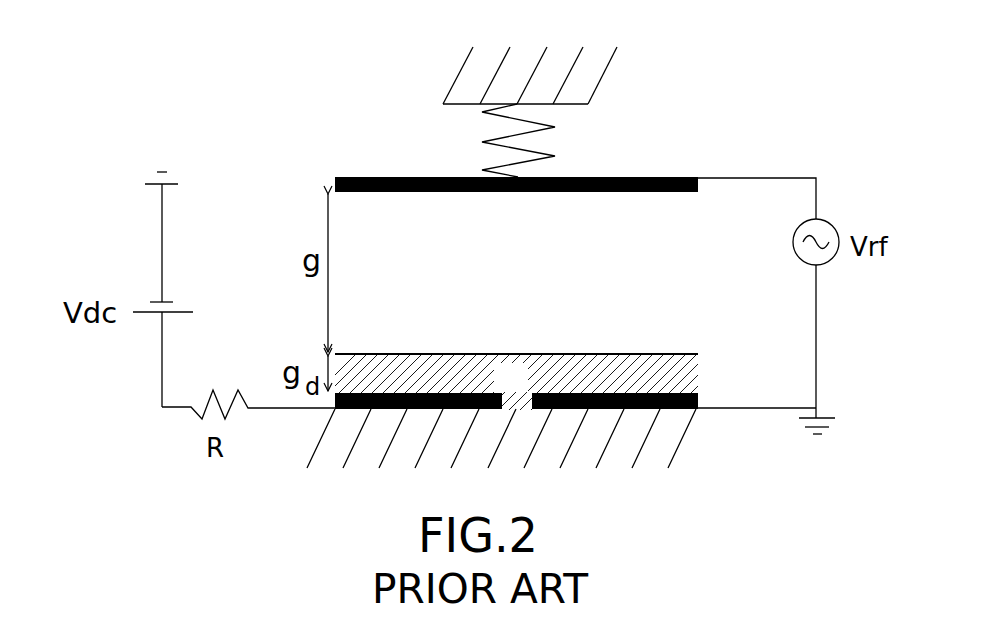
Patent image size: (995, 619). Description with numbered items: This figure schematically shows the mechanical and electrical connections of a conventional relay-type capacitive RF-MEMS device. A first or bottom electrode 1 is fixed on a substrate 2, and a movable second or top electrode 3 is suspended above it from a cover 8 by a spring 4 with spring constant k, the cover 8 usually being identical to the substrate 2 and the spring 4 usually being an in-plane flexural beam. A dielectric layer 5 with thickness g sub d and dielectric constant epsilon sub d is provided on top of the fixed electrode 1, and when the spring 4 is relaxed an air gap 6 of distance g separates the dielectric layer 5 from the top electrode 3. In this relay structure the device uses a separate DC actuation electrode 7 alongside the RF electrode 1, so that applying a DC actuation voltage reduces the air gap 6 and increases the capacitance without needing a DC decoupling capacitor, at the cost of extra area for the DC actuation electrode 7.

The bottom electrode 1 is at (698, 398).
The substrate 2 is at (673, 433).
The top electrode 3 is at (677, 177).
The spring 4 is at (552, 156).
The dielectric layer 5 is at (678, 362).
The air gap 6 is at (667, 283).
The DC actuation electrode 7 is at (383, 393).
The cover 8 is at (588, 80).